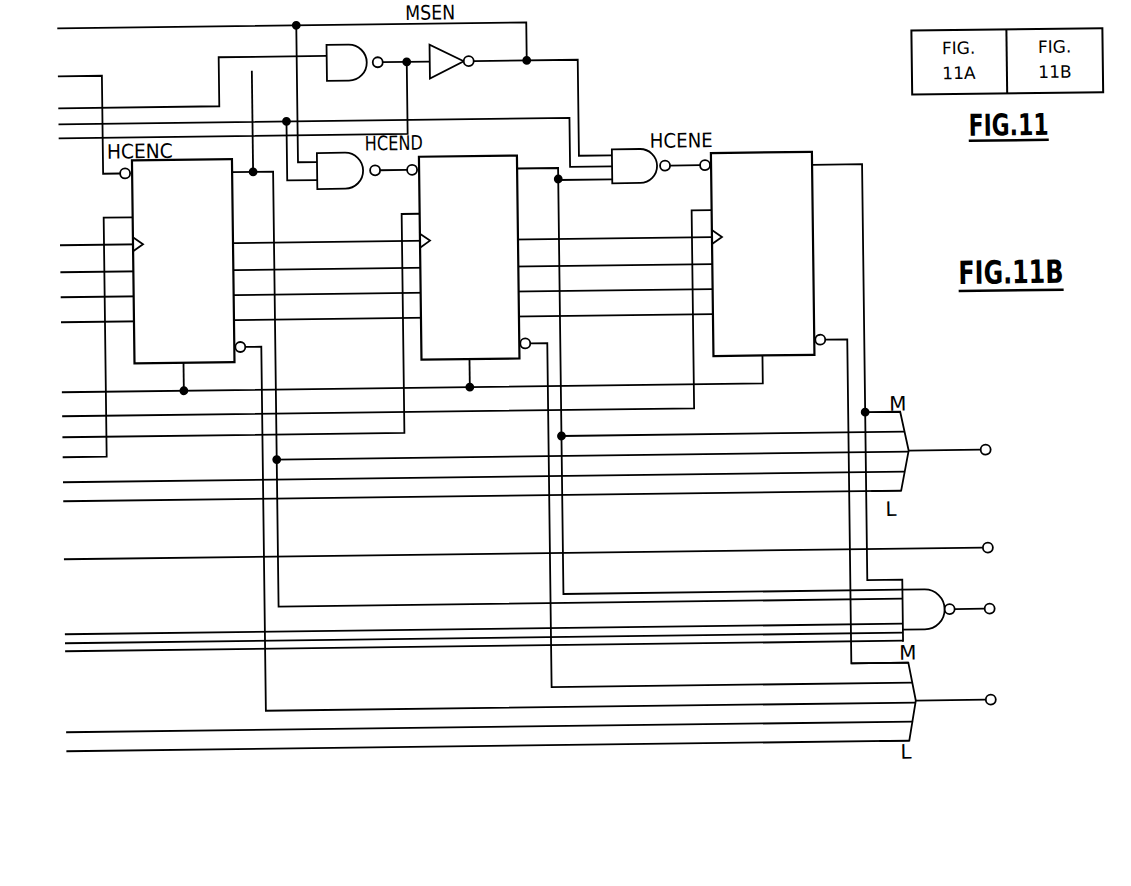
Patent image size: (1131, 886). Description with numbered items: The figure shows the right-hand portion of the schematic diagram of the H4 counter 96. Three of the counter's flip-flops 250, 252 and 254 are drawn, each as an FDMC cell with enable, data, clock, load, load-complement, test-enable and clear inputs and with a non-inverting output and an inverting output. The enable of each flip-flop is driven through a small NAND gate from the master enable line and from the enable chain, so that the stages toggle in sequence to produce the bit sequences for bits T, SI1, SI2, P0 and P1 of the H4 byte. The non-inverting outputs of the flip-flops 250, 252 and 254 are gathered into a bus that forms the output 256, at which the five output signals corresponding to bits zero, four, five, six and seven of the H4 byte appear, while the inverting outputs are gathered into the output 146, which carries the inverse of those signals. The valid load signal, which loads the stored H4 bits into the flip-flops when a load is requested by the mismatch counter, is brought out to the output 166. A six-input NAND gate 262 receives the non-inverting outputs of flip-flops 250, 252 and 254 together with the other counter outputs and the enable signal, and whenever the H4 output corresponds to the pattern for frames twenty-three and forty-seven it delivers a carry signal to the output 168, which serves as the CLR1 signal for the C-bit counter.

The H4 counter 96 is at (647, 66).
The flip-flop 250 is at (186, 156).
The flip-flop 252 is at (458, 155).
The flip-flop 254 is at (753, 156).
The output 256 is at (985, 449).
The output 166 is at (985, 547).
The gate 262 is at (922, 595).
The output 168 is at (987, 620).
The output 146 is at (990, 711).